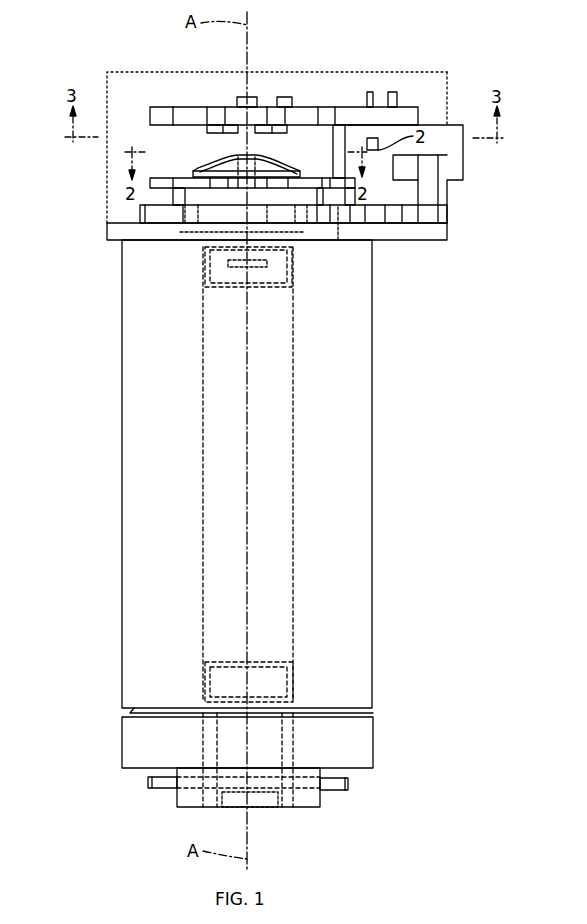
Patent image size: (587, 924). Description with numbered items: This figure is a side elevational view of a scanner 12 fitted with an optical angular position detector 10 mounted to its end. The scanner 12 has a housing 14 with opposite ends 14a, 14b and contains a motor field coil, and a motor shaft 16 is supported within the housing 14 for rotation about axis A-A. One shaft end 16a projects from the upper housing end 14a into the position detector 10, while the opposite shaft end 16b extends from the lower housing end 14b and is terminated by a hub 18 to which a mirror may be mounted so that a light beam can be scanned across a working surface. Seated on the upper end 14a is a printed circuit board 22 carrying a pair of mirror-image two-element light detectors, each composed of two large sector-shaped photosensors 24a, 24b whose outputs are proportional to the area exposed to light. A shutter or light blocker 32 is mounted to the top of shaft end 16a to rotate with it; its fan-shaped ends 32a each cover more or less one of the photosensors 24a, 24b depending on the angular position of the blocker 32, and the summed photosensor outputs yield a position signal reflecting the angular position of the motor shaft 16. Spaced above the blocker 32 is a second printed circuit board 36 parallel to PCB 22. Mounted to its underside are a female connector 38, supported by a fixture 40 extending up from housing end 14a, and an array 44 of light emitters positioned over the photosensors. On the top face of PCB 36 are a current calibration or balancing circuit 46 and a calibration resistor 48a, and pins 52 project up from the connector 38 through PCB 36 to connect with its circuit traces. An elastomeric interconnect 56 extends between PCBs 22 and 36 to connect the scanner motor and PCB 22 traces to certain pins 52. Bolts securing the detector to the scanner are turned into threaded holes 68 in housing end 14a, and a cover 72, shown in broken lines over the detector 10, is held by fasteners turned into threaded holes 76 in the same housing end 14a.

The optical angular position detector 10 is at (90, 66).
The scanner 12 is at (231, 526).
The housing 14 is at (368, 302).
The housing end 14a is at (140, 214).
The housing end 14b is at (355, 755).
The motor shaft 16 is at (293, 343).
The shaft end 16a is at (218, 243).
The shaft end 16b is at (268, 732).
The hub 18 is at (187, 793).
The printed circuit board 22 is at (350, 188).
The photosensor 24a is at (307, 173).
The photosensor 24b is at (193, 173).
The shutter or light blocker 32 is at (215, 165).
The fan-shaped end 32a is at (302, 170).
The second printed circuit board 36 is at (418, 117).
The female connector 38 is at (455, 168).
The fixture 40 is at (440, 205).
The array of light emitters 44 is at (290, 140).
The current calibration or balancing circuit 46 is at (282, 98).
The calibration resistor 48a is at (237, 98).
The pins 52 is at (392, 92).
The elastomeric interconnect 56 is at (350, 160).
The threaded holes 68 is at (172, 232).
The cover 72 is at (445, 72).
The threaded holes 76 is at (338, 240).